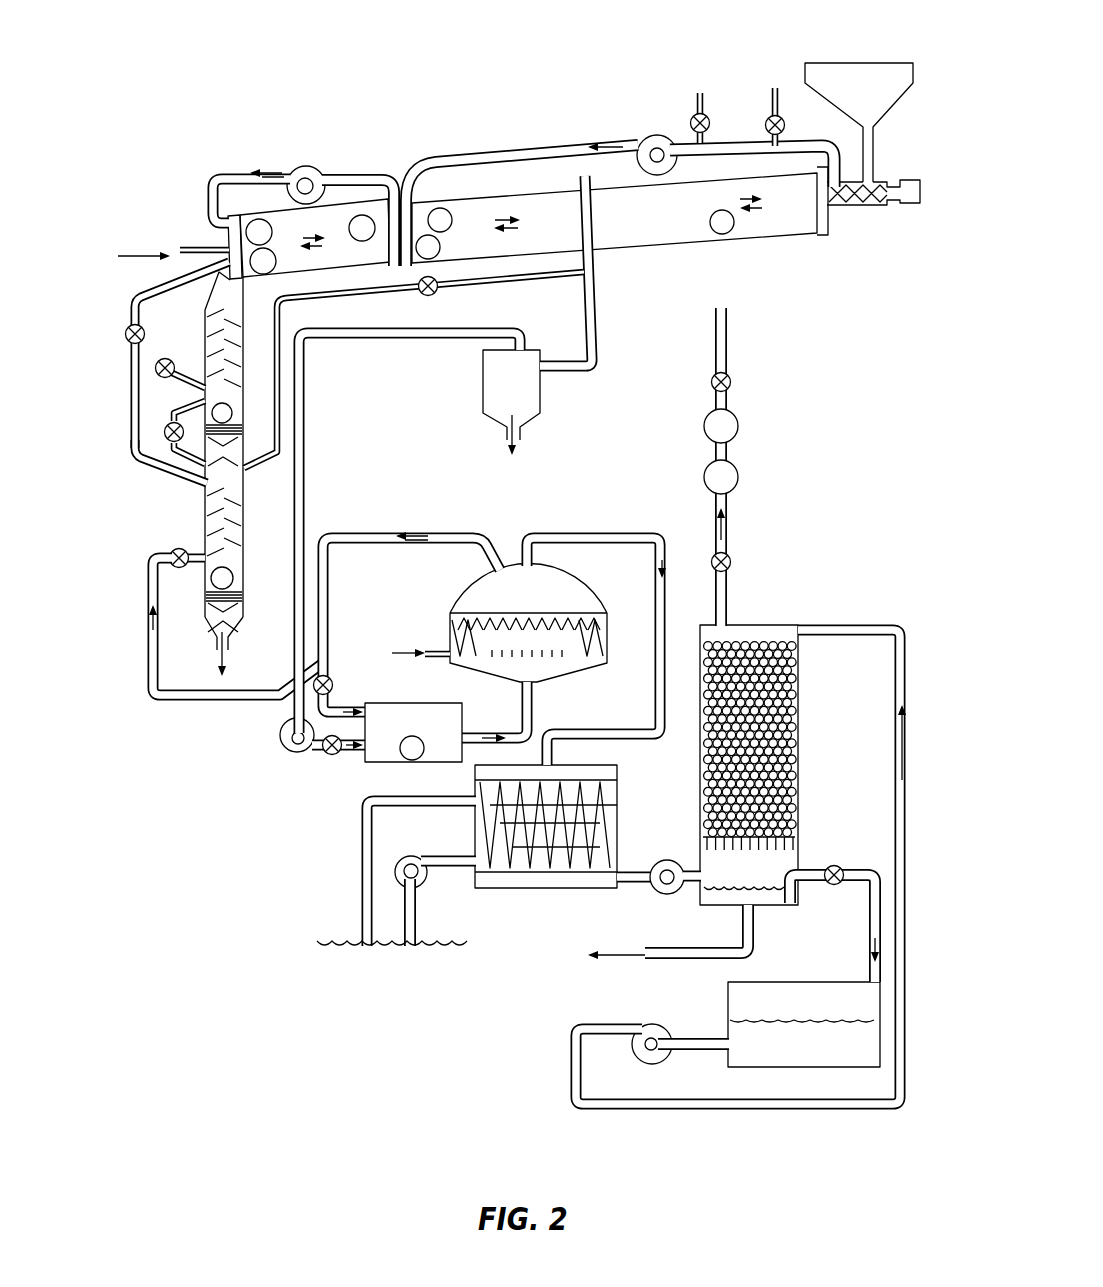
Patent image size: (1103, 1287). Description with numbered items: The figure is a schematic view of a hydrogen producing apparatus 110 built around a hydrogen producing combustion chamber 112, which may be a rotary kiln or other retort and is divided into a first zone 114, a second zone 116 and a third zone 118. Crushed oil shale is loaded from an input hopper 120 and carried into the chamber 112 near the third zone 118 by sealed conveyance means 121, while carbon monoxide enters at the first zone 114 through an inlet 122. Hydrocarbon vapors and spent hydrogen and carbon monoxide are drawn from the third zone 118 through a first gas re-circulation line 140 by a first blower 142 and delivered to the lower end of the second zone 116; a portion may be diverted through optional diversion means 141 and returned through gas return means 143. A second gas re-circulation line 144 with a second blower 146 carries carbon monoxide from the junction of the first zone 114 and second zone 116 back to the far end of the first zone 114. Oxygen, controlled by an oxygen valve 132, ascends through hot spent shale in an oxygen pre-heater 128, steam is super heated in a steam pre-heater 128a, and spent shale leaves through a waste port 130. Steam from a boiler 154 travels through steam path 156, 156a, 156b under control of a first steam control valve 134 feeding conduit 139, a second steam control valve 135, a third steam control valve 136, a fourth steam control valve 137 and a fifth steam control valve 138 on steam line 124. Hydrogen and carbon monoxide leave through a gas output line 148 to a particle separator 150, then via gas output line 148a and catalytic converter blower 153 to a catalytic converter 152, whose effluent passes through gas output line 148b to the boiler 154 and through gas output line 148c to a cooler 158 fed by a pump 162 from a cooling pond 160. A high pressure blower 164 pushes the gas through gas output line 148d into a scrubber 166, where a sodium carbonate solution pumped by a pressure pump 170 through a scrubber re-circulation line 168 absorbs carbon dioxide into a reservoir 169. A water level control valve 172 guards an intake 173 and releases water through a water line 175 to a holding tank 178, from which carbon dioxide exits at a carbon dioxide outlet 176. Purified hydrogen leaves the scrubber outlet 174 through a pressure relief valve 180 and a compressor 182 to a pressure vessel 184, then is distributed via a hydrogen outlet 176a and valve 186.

The hydrogen producing apparatus 110 is at (495, 85).
The hydrogen producing combustion chamber 112 is at (623, 263).
The first zone 114 is at (303, 269).
The second zone 116 is at (460, 257).
The third zone 118 is at (704, 246).
The input hopper 120 is at (838, 61).
The sealed conveyance means 121 is at (866, 210).
The carbon monoxide inlet 122 is at (197, 247).
The steam line 124 is at (553, 281).
The oxygen pre-heater 128 is at (203, 313).
The steam pre-heater 128a is at (203, 511).
The waste port 130 is at (230, 646).
The oxygen valve 132 is at (155, 367).
The first steam control valve 134 is at (162, 432).
The second steam control valve 135 is at (128, 330).
The third steam control valve 136 is at (170, 558).
The fourth steam control valve 137 is at (333, 680).
The fifth steam control valve 138 is at (434, 294).
The conduit 139 is at (165, 449).
The first gas re-circulation line 140 is at (568, 138).
The optional diversion means 141 is at (777, 92).
The first blower 142 is at (663, 135).
The gas return means 143 is at (705, 103).
The second gas re-circulation line 144 is at (217, 168).
The second blower 146 is at (307, 166).
The gas output line 148 is at (600, 332).
The gas output line 148a is at (305, 482).
The gas output line 148b is at (535, 690).
The gas output line 148c is at (593, 532).
The gas output line 148d is at (592, 893).
The particle separator 150 is at (530, 402).
The catalytic converter 152 is at (382, 764).
The catalytic converter blower 153 is at (286, 750).
The boiler 154 is at (467, 580).
The steam path 156 is at (354, 534).
The steam path 156a is at (190, 700).
The steam path 156b is at (160, 471).
The cooler 158 is at (617, 803).
The cooling pond 160 is at (330, 938).
The pump 162 is at (408, 855).
The high pressure blower 164 is at (664, 860).
The scrubber 166 is at (800, 753).
The scrubber re-circulation line 168 is at (913, 632).
The reservoir 169 is at (717, 893).
The pressure pump 170 is at (650, 1023).
The water level control valve 172 is at (832, 887).
The intake 173 is at (783, 880).
The scrubber outlet 174 is at (728, 612).
The water line 175 is at (863, 932).
The carbon dioxide outlet 176 is at (655, 962).
The hydrogen outlet 176a is at (727, 345).
The holding tank 178 is at (807, 1068).
The pressure relief valve 180 is at (731, 562).
The compressor 182 is at (738, 478).
The pressure vessel 184 is at (738, 427).
The valve 186 is at (731, 383).